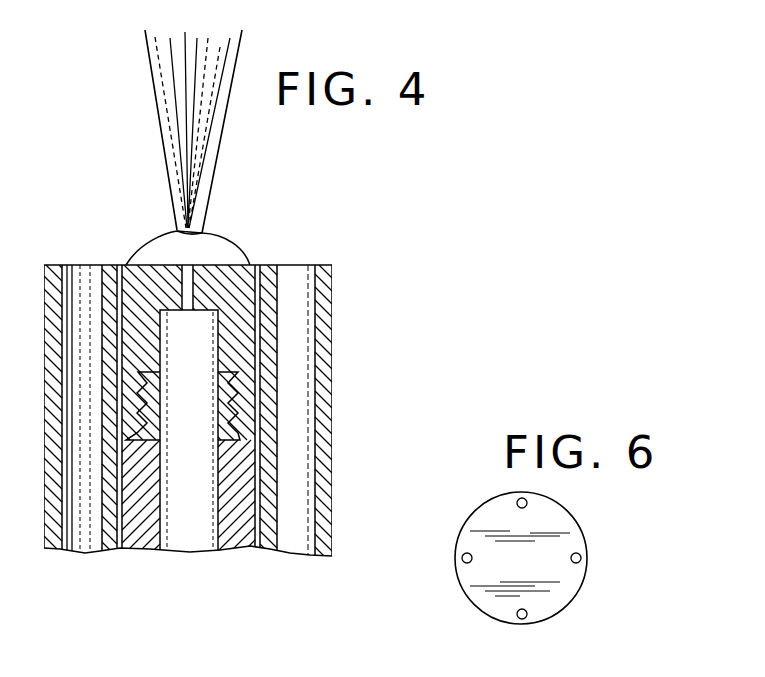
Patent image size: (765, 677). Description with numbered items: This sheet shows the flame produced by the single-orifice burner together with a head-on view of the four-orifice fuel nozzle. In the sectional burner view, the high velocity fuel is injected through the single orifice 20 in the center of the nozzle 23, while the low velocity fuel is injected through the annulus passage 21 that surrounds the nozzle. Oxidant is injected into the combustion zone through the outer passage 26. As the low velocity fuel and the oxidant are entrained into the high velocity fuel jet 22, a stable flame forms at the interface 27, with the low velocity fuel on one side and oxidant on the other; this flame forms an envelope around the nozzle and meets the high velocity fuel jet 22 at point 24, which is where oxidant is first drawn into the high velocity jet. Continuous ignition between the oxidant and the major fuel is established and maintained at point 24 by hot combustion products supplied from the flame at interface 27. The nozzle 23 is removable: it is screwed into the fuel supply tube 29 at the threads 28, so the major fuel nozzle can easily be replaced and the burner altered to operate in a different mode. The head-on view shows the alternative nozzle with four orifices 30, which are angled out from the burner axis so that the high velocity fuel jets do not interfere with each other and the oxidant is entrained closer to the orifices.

In FIG. 4, the single orifice 20 is at (193, 265).
In FIG. 4, the annulus passage 21 is at (258, 288).
In FIG. 4, the high velocity fuel jet 22 is at (160, 127).
In FIG. 4, the nozzle 23 is at (237, 333).
In FIG. 4, the point 24 is at (205, 232).
In FIG. 4, the passage 26 is at (312, 326).
In FIG. 4, the interface 27 is at (145, 248).
In FIG. 4, the threads 28 is at (232, 410).
In FIG. 4, the fuel supply tube 29 is at (233, 532).
In FIG. 6, the orifices 30 is at (581, 560).